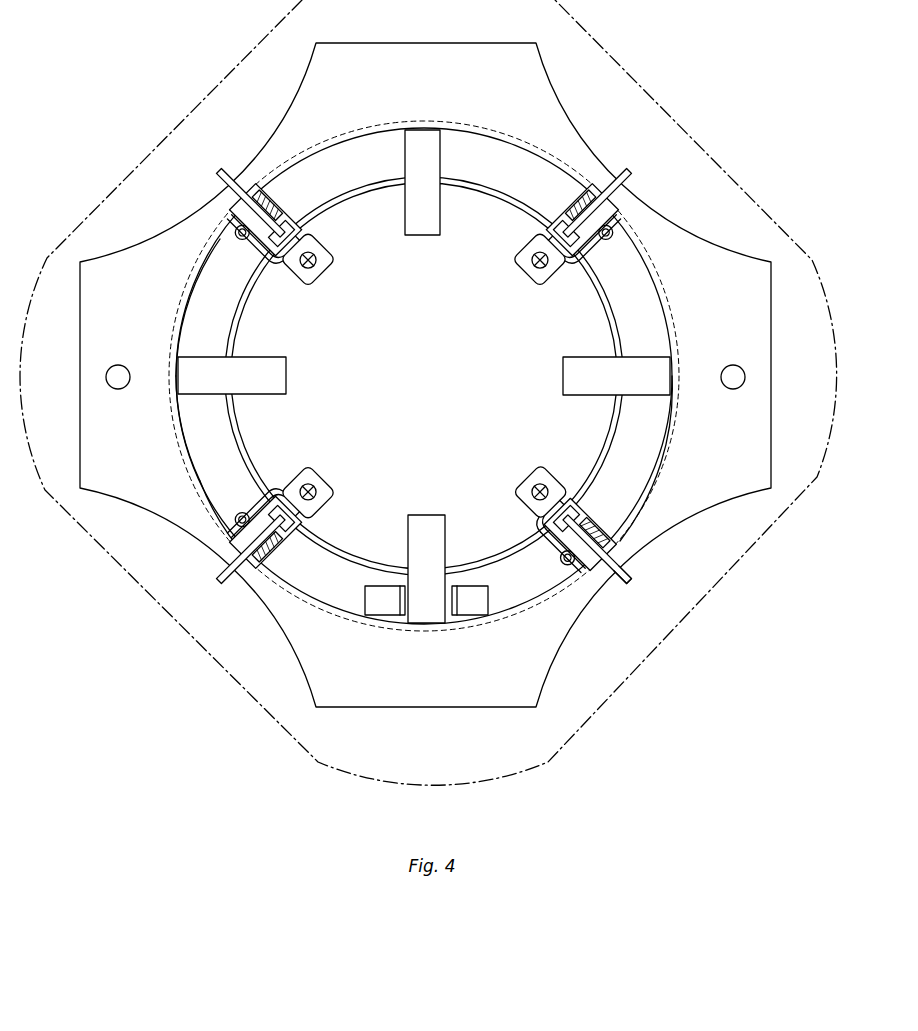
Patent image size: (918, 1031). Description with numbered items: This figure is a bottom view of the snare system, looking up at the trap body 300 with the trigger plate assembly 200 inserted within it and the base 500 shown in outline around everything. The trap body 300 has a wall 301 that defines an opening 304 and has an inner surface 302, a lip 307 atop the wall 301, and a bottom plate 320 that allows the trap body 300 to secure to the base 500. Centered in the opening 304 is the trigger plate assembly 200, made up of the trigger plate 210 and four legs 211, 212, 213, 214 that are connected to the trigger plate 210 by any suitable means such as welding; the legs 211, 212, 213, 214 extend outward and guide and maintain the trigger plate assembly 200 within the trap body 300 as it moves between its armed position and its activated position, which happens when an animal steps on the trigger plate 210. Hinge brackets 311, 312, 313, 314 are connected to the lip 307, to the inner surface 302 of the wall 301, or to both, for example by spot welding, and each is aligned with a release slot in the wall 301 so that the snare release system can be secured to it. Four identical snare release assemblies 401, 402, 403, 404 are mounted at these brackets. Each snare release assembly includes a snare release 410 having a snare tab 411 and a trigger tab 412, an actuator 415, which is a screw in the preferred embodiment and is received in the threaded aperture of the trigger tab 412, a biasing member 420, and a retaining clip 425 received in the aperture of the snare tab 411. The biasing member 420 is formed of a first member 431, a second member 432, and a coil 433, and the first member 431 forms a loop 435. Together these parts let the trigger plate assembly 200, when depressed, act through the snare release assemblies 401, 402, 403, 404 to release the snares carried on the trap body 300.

The trigger plate assembly 200 is at (377, 362).
The trigger plate 210 is at (344, 214).
The leg 211 is at (418, 236).
The leg 212 is at (250, 388).
The leg 213 is at (418, 533).
The leg 214 is at (583, 363).
The trap body 300 is at (409, 85).
The wall 301 is at (213, 447).
The inner surface 302 is at (212, 498).
The opening 304 is at (197, 283).
The lip 307 is at (619, 457).
The hinge bracket 311 is at (588, 245).
The hinge bracket 312 is at (559, 528).
The hinge bracket 313 is at (282, 565).
The hinge bracket 314 is at (262, 236).
The bottom plate 320 is at (707, 315).
The snare release assembly 401 is at (606, 536).
The snare release assembly 402 is at (229, 588).
The snare release assembly 403 is at (232, 193).
The snare release assembly 404 is at (596, 188).
The snare release 410 is at (632, 583).
The snare tab 411 is at (618, 569).
The trigger tab 412 is at (540, 466).
The actuator 415 is at (530, 472).
The biasing member 420 is at (523, 530).
The retaining clip 425 is at (542, 590).
The first member 431 is at (556, 491).
The second member 432 is at (600, 577).
The coil 433 is at (592, 578).
The loop 435 is at (516, 494).
The base 500 is at (712, 575).